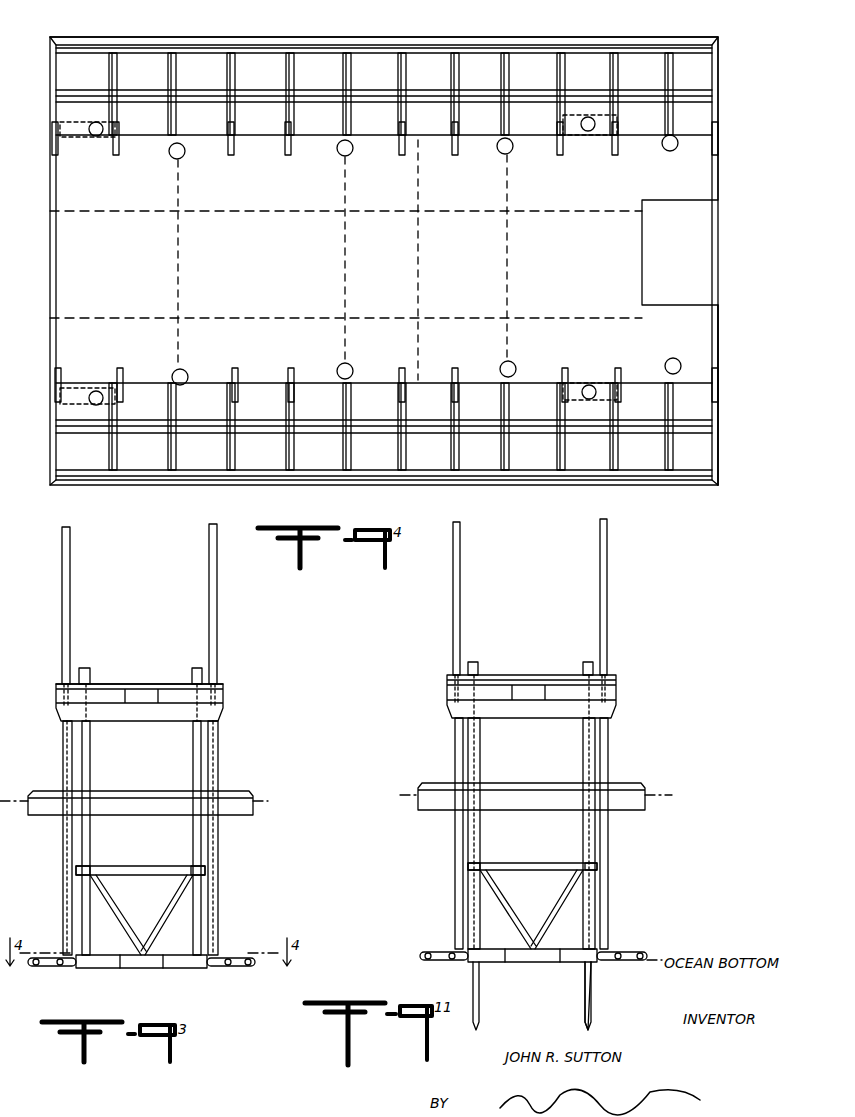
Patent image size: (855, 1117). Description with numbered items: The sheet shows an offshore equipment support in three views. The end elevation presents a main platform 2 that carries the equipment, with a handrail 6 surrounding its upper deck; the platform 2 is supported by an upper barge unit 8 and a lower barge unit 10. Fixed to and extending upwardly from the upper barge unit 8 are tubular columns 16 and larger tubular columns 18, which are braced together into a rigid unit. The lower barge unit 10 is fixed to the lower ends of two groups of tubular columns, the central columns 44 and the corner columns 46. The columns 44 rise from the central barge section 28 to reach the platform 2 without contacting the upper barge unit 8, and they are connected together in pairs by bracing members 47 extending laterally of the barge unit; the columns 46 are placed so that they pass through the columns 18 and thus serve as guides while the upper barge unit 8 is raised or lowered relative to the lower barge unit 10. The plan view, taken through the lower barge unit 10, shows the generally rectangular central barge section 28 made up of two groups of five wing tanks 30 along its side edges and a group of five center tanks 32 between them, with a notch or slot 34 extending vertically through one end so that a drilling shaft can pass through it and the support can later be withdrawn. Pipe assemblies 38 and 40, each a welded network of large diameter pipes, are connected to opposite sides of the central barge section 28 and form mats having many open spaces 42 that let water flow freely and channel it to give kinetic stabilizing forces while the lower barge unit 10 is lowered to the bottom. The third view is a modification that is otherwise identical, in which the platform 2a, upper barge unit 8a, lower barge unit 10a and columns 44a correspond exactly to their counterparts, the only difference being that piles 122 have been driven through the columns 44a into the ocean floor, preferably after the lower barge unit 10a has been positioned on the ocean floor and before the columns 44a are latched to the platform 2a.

In FIG. 4, the lower barge unit 10 is at (676, 31).
In FIG. 3, the lower barge unit 10 is at (205, 972).
In FIG. 4, the central barge section 28 is at (50, 240).
In FIG. 4, the wing tanks 30 is at (363, 259).
In FIG. 4, the center tanks 32 is at (341, 252).
In FIG. 4, the notch or slot 34 is at (704, 312).
In FIG. 4, the pipe assembly 38 is at (488, 42).
In FIG. 4, the pipe assembly 40 is at (699, 478).
In FIG. 4, the open spaces 42 is at (636, 46).
In FIG. 4, the tubular columns 44 is at (185, 151).
In FIG. 3, the tubular columns 44 is at (90, 680).
In FIG. 4, the tubular columns 46 is at (96, 136).
In FIG. 3, the tubular columns 46 is at (63, 680).
In FIG. 3, the main platform 2 is at (223, 698).
In FIG. 3, the handrail 6 is at (163, 684).
In FIG. 3, the upper barge unit 8 is at (159, 788).
In FIG. 3, the tubular columns 16 is at (70, 594).
In FIG. 3, the tubular columns 18 is at (63, 770).
In FIG. 3, the bracing members 47 is at (143, 866).
In FIG. 11, the platform 2a is at (616, 699).
In FIG. 11, the upper barge unit 8a is at (650, 791).
In FIG. 11, the lower barge unit 10a is at (628, 948).
In FIG. 11, the columns 44a is at (582, 760).
In FIG. 11, the piles 122 is at (478, 978).